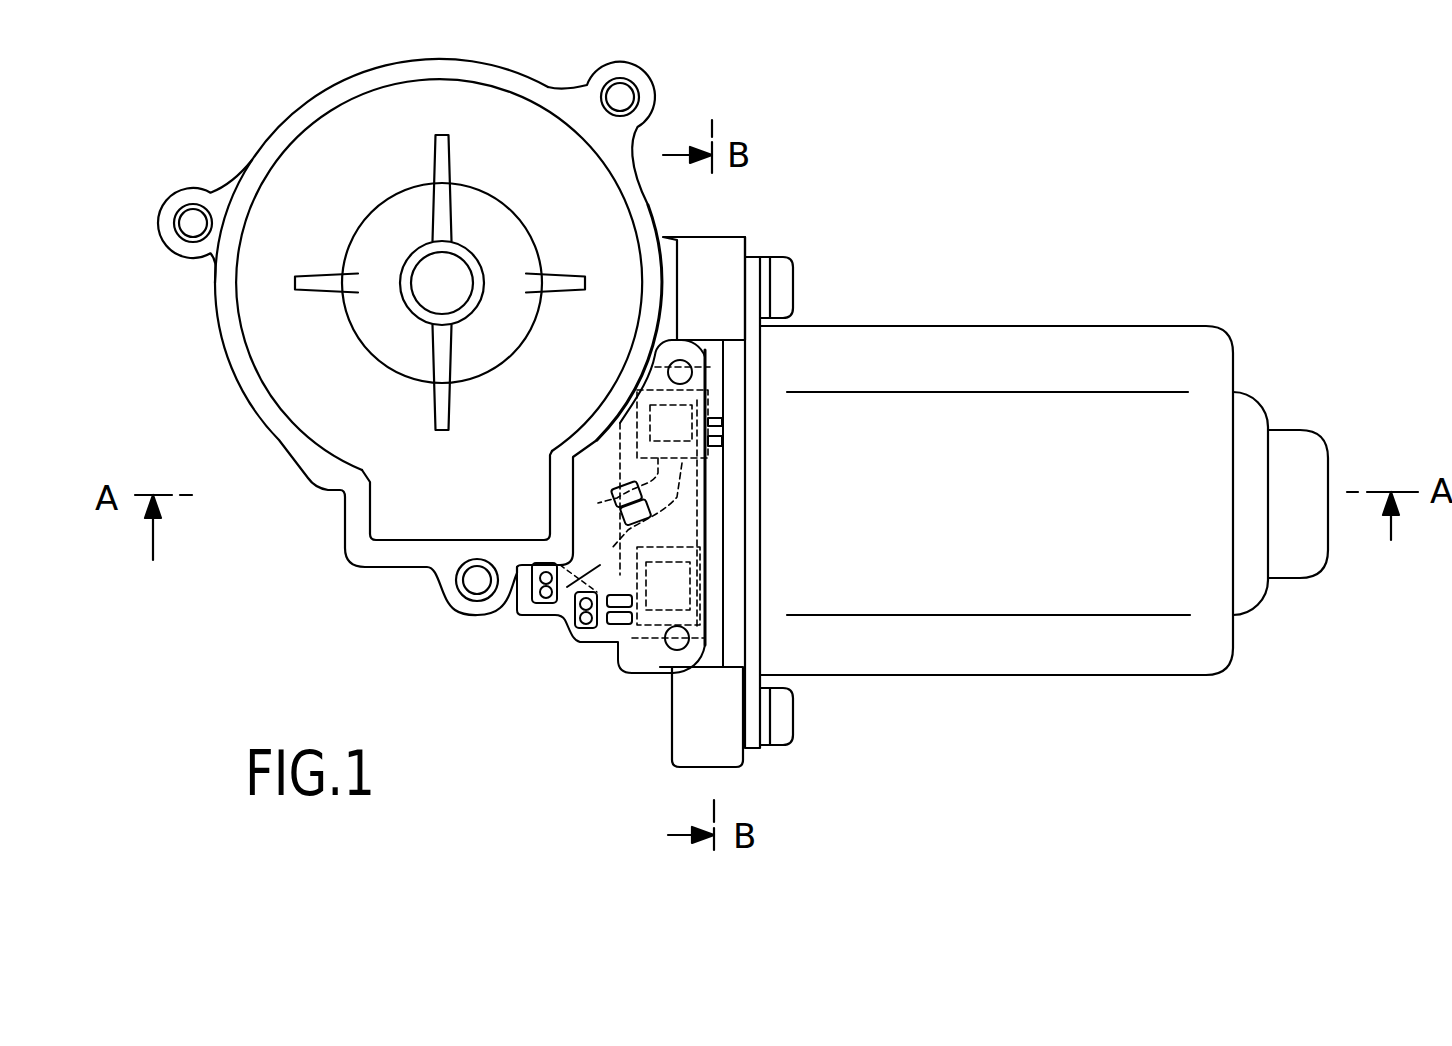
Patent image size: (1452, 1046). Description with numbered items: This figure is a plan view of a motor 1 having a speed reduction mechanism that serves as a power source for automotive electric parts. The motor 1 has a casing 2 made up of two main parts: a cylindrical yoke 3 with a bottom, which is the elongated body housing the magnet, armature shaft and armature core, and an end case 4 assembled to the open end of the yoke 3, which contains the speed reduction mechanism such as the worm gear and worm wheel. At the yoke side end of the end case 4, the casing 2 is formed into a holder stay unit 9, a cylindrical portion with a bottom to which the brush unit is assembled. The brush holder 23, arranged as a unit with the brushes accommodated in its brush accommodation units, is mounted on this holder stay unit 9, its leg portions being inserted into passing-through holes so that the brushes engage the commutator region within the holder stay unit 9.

The motor 1 is at (743, 407).
The casing 2 is at (994, 502).
The yoke 3 is at (1015, 665).
The end case 4 is at (328, 472).
The holder stay unit 9 is at (644, 674).
The brush holder 23 is at (647, 532).